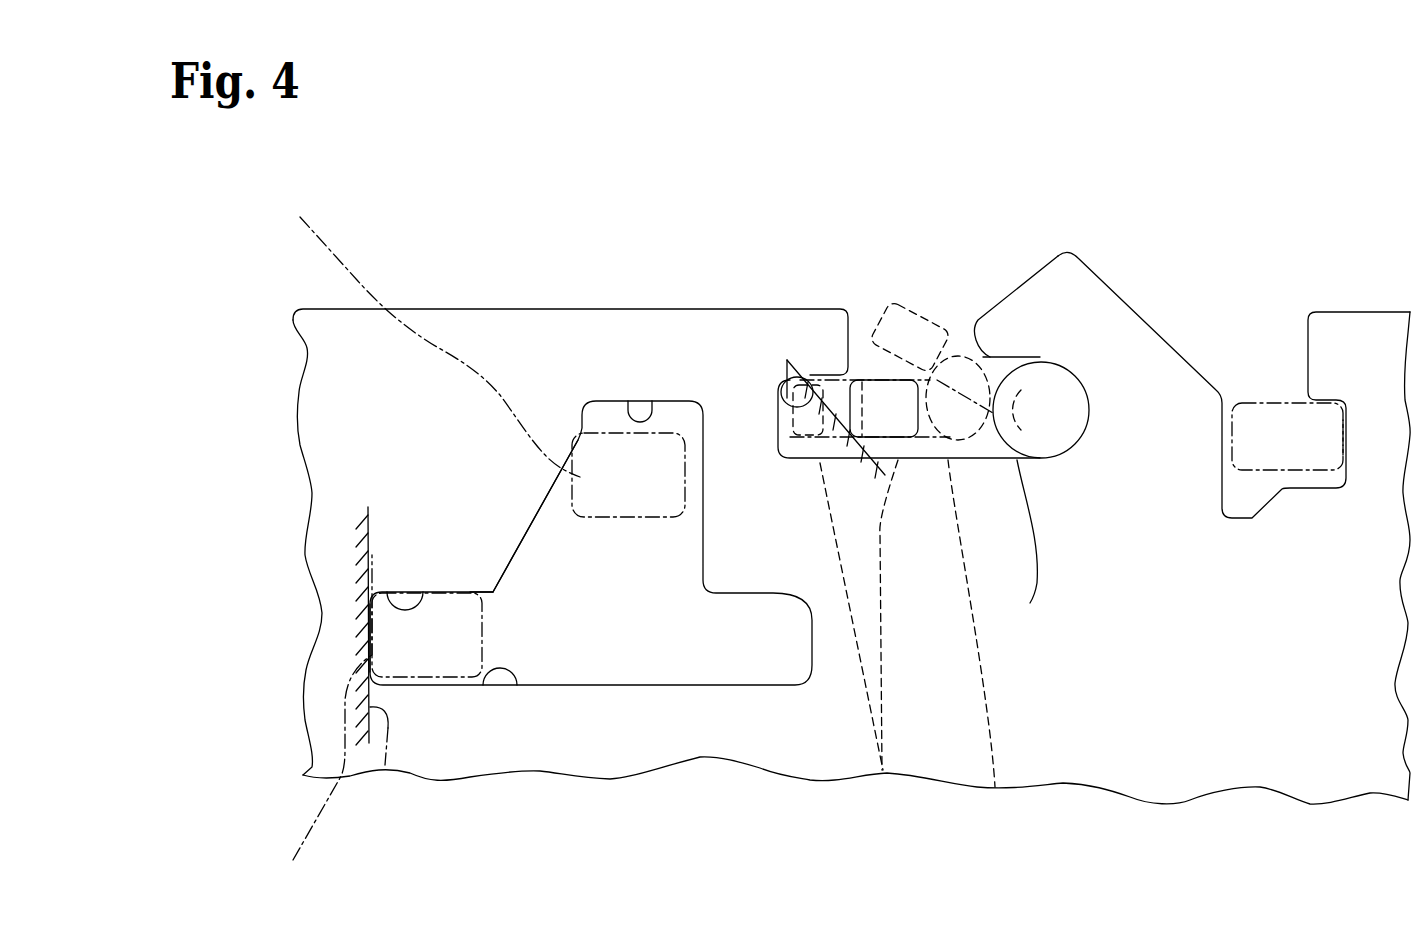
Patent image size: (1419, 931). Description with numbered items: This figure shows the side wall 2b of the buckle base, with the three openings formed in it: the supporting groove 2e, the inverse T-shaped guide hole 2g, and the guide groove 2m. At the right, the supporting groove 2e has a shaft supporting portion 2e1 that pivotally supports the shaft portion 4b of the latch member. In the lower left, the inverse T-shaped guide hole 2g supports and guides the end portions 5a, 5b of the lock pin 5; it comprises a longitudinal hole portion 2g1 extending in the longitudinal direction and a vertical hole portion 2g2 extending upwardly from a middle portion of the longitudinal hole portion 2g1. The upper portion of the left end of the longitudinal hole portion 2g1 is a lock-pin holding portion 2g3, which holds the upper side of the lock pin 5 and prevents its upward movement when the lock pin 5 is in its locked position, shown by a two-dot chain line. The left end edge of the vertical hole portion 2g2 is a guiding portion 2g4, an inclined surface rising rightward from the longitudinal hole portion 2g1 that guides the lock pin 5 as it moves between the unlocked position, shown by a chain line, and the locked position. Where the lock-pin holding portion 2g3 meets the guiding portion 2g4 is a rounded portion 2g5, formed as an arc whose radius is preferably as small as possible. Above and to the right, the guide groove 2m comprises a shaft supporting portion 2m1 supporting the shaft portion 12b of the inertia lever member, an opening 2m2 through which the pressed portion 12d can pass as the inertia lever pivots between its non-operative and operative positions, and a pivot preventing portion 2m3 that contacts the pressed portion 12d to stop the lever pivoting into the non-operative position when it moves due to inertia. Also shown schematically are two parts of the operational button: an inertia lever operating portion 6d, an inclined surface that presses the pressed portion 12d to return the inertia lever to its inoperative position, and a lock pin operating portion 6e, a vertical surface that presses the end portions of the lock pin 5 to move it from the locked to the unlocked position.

The side wall 2b is at (485, 310).
The lock pin 5 is at (403, 541).
The inverse T-shaped guide hole 2g is at (703, 284).
The longitudinal hole portion 2g1 is at (517, 687).
The vertical hole portion 2g2 is at (651, 400).
The lock-pin holding portion 2g3 is at (372, 580).
The guiding portion 2g4 is at (533, 520).
The rounded portion 2g5 is at (493, 592).
The end portion of the lock pin 5a is at (603, 400).
The end portion of the lock pin 5b is at (574, 395).
The lock pin operating portion 6e is at (385, 767).
The inertia lever operating portion 6d is at (820, 240).
The guide groove 2m is at (993, 182).
The shaft supporting portion 2m1 is at (1087, 372).
The opening 2m2 is at (857, 378).
The pivot preventing portion 2m3 is at (780, 403).
The pressed portion 12d is at (927, 318).
The shaft portion 12b is at (1030, 603).
The shaft portion 4b is at (1220, 433).
The supporting groove 2e is at (1232, 287).
The shaft supporting portion 2e1 is at (1340, 447).